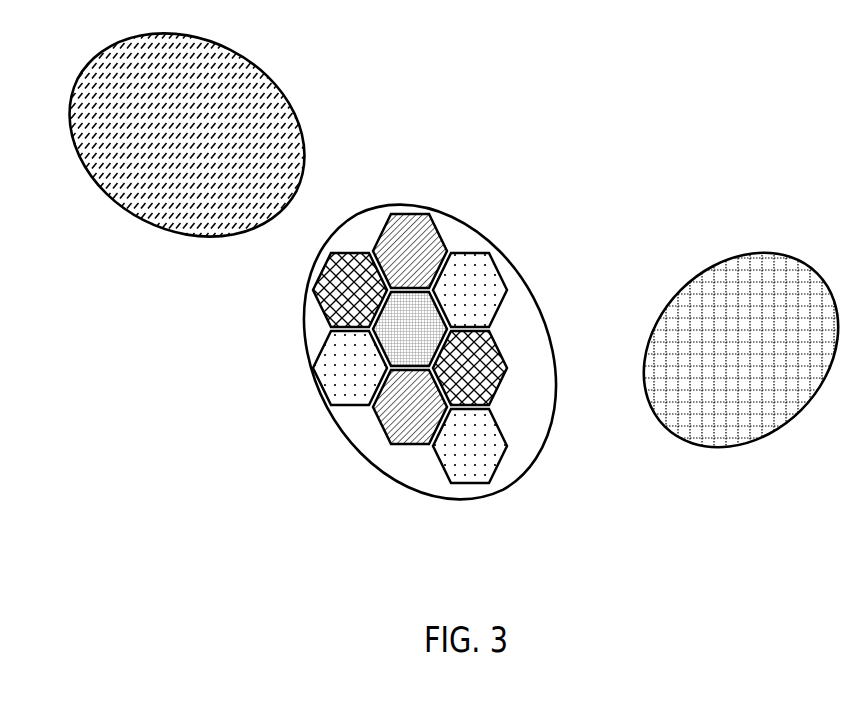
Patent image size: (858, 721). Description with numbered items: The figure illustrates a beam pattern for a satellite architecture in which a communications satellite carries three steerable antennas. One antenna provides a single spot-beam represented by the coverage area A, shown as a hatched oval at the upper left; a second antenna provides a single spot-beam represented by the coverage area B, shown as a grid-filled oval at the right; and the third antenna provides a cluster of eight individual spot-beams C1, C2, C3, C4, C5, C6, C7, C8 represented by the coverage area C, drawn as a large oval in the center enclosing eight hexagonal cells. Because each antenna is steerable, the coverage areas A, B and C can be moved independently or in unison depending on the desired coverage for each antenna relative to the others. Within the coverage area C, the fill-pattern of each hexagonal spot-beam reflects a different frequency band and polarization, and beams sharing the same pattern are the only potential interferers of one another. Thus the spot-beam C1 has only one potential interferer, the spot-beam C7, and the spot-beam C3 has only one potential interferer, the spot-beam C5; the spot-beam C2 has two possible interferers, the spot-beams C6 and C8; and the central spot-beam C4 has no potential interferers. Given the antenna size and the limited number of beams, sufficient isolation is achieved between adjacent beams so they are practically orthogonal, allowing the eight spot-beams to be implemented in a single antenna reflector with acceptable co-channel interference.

The coverage area A is at (187, 134).
The coverage area B is at (741, 350).
The coverage area C is at (430, 352).
The spot-beam C1 is at (350, 290).
The spot-beam C2 is at (350, 368).
The spot-beam C3 is at (410, 251).
The spot-beam C4 is at (410, 329).
The spot-beam C5 is at (410, 407).
The spot-beam C6 is at (470, 290).
The spot-beam C7 is at (470, 368).
The spot-beam C8 is at (470, 446).